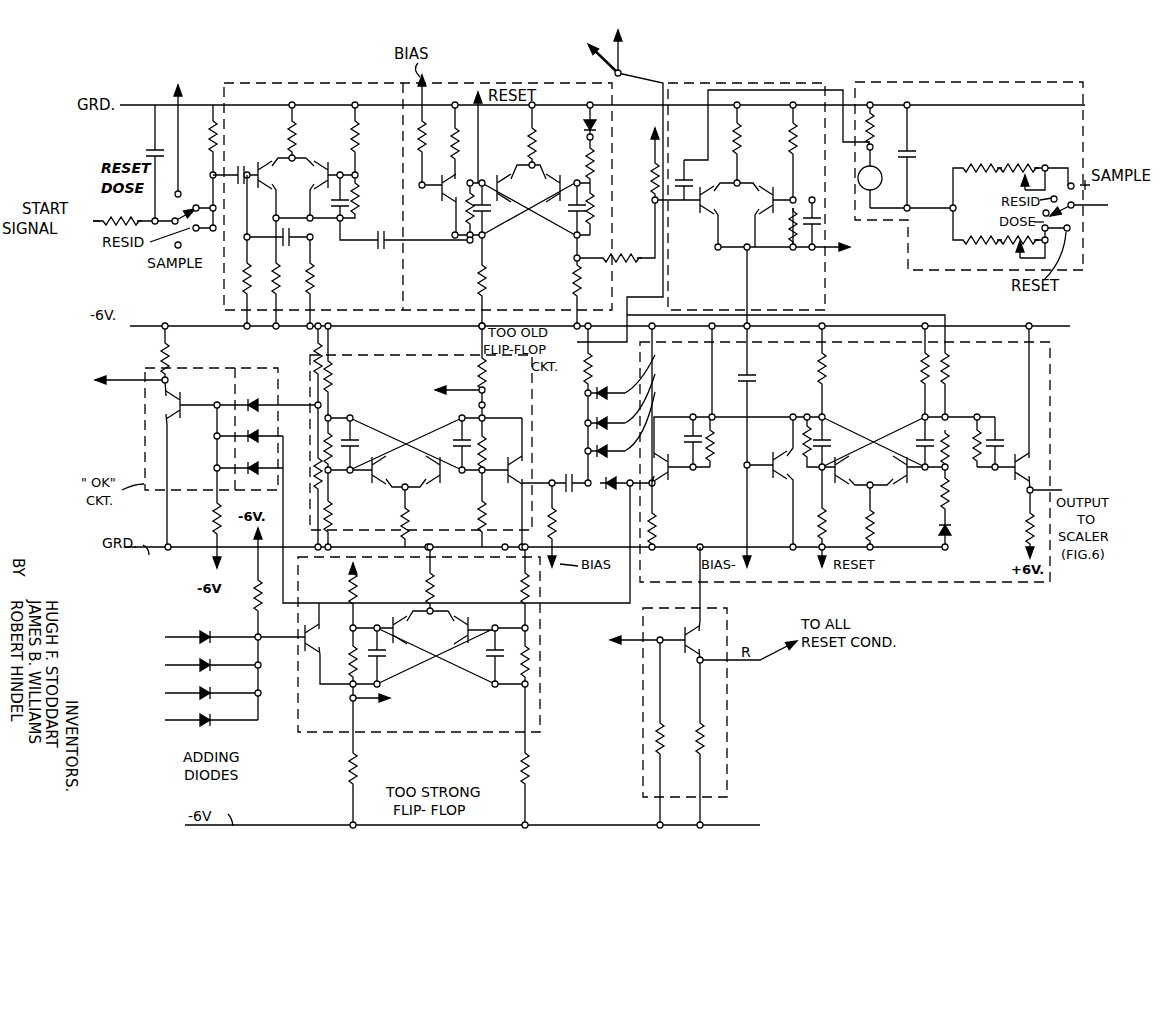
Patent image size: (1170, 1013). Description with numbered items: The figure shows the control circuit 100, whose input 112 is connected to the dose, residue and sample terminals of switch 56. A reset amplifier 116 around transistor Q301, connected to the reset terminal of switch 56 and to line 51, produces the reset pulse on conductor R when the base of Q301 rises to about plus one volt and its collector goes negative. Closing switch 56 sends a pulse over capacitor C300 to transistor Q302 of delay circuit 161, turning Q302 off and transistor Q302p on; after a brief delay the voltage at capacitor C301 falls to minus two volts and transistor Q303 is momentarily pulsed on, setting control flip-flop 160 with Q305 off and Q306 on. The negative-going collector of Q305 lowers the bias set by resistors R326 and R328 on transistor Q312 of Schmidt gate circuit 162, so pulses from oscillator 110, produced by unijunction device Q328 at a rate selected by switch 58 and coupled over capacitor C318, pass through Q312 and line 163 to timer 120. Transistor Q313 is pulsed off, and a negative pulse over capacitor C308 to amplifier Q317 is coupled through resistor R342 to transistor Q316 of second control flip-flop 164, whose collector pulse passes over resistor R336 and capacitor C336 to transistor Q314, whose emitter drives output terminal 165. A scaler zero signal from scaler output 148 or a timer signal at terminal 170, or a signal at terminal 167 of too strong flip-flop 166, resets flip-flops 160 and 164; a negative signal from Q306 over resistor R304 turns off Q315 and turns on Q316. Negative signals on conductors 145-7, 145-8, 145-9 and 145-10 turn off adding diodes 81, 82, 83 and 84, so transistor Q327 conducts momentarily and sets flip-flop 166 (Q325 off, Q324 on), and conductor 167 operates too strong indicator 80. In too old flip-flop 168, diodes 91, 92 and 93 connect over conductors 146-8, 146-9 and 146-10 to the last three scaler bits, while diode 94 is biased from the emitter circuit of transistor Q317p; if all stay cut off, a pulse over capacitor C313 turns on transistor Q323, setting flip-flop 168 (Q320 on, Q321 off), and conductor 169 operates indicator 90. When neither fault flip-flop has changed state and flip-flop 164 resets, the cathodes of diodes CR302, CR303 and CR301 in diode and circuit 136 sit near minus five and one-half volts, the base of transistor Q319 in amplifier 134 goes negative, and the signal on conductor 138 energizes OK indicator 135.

The control circuit 100 is at (984, 720).
The reset line 51 is at (182, 95).
The switch 56 is at (92, 242).
The switch 58 is at (1084, 212).
The input 112 is at (210, 188).
The reset amplifier 116 is at (738, 708).
The timer 120 is at (620, 50).
The delay circuit 161 is at (294, 78).
The control flip-flop circuit 160 is at (545, 80).
The scaler output 148 is at (588, 60).
The terminal 167 is at (642, 76).
The terminal 170 is at (592, 136).
The Schmidt circuit 162 is at (803, 86).
The oscillator 110 is at (978, 86).
The line 163 is at (834, 258).
The output terminal 138 is at (138, 370).
The amplifier 134 is at (216, 352).
The diode and circuit 136 is at (256, 380).
The OK indicator 135 is at (42, 391).
The too old flip-flop 168 is at (418, 356).
The terminal 169 is at (472, 392).
The too weak indicator 90 is at (382, 381).
The too strong indicator 80 is at (432, 705).
The diode 91 is at (603, 385).
The diode 92 is at (603, 415).
The diode 93 is at (603, 443).
The diode 94 is at (606, 476).
The conductor 146-8 is at (660, 370).
The conductor 146-9 is at (660, 394).
The conductor 146-10 is at (664, 417).
The second control flip-flop 164 is at (853, 491).
The output terminal 165 is at (1068, 488).
The too strong flip-flop 166 is at (482, 742).
The adding diode 81 is at (199, 634).
The adding diode 82 is at (199, 662).
The adding diode 83 is at (199, 690).
The adding diode 84 is at (199, 717).
The conductor 145-7 is at (176, 638).
The conductor 145-8 is at (176, 665).
The conductor 145-9 is at (176, 693).
The conductor 145-10 is at (173, 730).
The capacitor C300 is at (232, 252).
The capacitor C301 is at (377, 232).
The capacitor C308 is at (757, 385).
The capacitor C313 is at (568, 482).
The capacitor C318 is at (700, 176).
The capacitor C336 is at (996, 472).
The resistor R304 is at (952, 360).
The resistor R326 is at (620, 247).
The resistor R328 is at (666, 166).
The resistor R336 is at (956, 442).
The resistor R342 is at (805, 417).
The transistor Q301 is at (676, 670).
The transistor Q302 is at (269, 145).
The transistor Q302p is at (334, 153).
The transistor Q303 is at (432, 244).
The transistor Q305 is at (532, 189).
The transistor Q306 is at (562, 176).
The transistor Q312 is at (719, 200).
The transistor Q313 is at (776, 192).
The transistor Q314 is at (1030, 456).
The transistor Q315 is at (913, 510).
The transistor Q316 is at (910, 488).
The amplifier transistor Q317 is at (770, 465).
The transistor Q317p is at (666, 472).
The transistor Q319 is at (171, 400).
The transistor Q320 is at (411, 480).
The transistor Q321 is at (444, 490).
The transistor Q323 is at (518, 481).
The transistor Q324 is at (476, 628).
The transistor Q325 is at (390, 626).
The transistor Q327 is at (314, 668).
The unijunction device Q328 is at (884, 179).
The diode CR301 is at (240, 436).
The diode CR302 is at (240, 466).
The diode CR303 is at (242, 378).